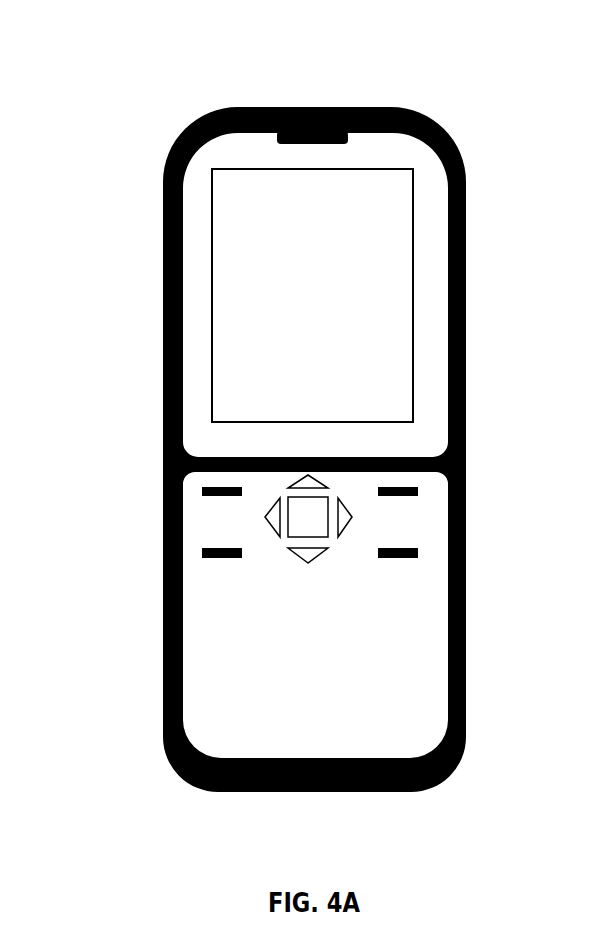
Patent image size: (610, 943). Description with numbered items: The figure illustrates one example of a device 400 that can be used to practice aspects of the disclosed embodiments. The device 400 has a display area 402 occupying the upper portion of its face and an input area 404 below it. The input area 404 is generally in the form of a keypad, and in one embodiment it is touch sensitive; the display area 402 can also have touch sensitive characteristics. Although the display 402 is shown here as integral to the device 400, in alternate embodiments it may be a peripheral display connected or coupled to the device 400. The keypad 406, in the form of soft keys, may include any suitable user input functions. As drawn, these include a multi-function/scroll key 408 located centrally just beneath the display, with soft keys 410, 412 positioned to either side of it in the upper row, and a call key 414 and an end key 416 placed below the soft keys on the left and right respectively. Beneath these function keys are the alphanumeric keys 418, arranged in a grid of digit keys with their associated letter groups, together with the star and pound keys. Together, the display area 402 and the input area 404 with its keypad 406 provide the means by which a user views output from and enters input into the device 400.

The device 400 is at (377, 93).
The display area 402 is at (390, 272).
The input area 404 is at (390, 598).
The keypad 406 is at (393, 690).
The multi-function/scroll key 408 is at (355, 512).
The soft key 410 is at (197, 482).
The soft key 412 is at (417, 483).
The call key 414 is at (197, 547).
The end key 416 is at (420, 552).
The alphanumeric keys 418 is at (315, 692).